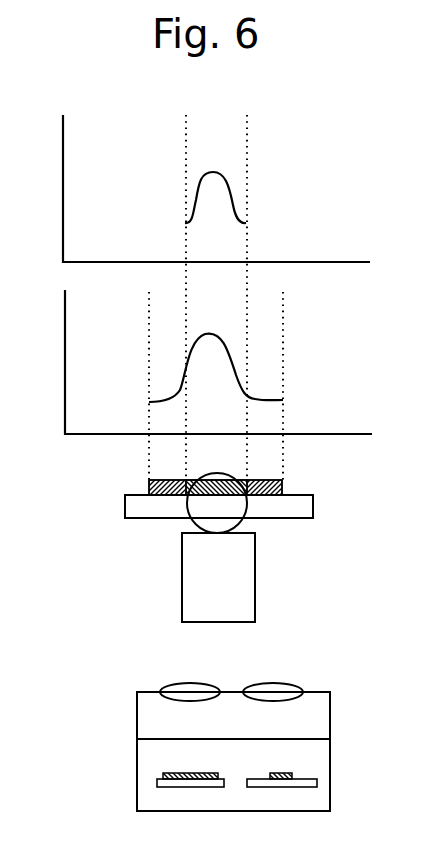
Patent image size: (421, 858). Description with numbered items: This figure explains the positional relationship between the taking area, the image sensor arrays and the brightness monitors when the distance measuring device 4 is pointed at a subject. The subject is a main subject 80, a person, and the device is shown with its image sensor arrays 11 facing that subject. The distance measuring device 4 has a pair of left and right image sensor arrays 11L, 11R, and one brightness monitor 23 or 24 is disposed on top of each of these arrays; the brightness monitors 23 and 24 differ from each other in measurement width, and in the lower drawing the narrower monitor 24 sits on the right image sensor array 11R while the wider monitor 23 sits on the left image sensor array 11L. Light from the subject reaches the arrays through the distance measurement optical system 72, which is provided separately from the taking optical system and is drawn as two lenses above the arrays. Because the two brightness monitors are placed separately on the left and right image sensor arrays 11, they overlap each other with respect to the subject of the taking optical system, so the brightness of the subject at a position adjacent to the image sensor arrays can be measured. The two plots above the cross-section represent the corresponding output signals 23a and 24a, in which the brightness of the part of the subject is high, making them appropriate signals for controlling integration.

The output signal 24a is at (240, 179).
The output signal 23a is at (264, 374).
The brightness monitor 23 is at (288, 491).
The brightness monitor 24 is at (219, 481).
The image sensor arrays 11 is at (313, 506).
The main subject 80 is at (240, 601).
The light emitting device 4 is at (336, 686).
The distance measurement optical system 72 is at (256, 682).
The left image sensor array 11L is at (185, 787).
The right image sensor array 11R is at (290, 787).